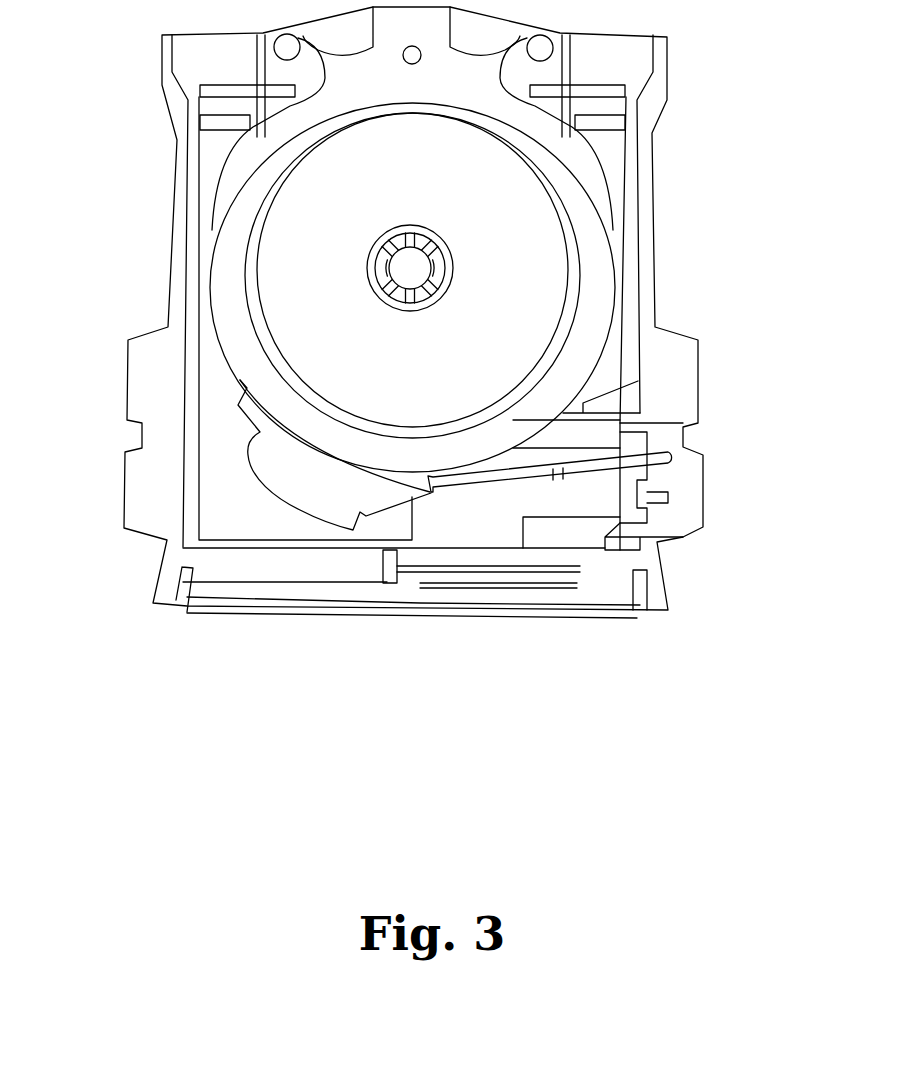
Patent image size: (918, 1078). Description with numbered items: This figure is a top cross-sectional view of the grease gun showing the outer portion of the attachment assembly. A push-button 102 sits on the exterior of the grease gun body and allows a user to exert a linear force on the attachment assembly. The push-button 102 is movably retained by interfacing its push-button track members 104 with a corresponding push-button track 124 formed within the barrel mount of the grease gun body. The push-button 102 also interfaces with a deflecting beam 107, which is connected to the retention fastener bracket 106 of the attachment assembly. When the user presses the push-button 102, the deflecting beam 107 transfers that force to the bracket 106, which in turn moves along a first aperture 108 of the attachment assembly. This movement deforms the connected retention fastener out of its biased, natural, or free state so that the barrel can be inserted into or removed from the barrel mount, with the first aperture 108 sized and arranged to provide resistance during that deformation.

The push-button 102 is at (706, 494).
The push-button track members 104 is at (597, 543).
The retention fastener bracket 106 is at (337, 513).
The deflecting beam 107 is at (598, 466).
The first aperture 108 is at (260, 405).
The push-button track 124 is at (532, 543).